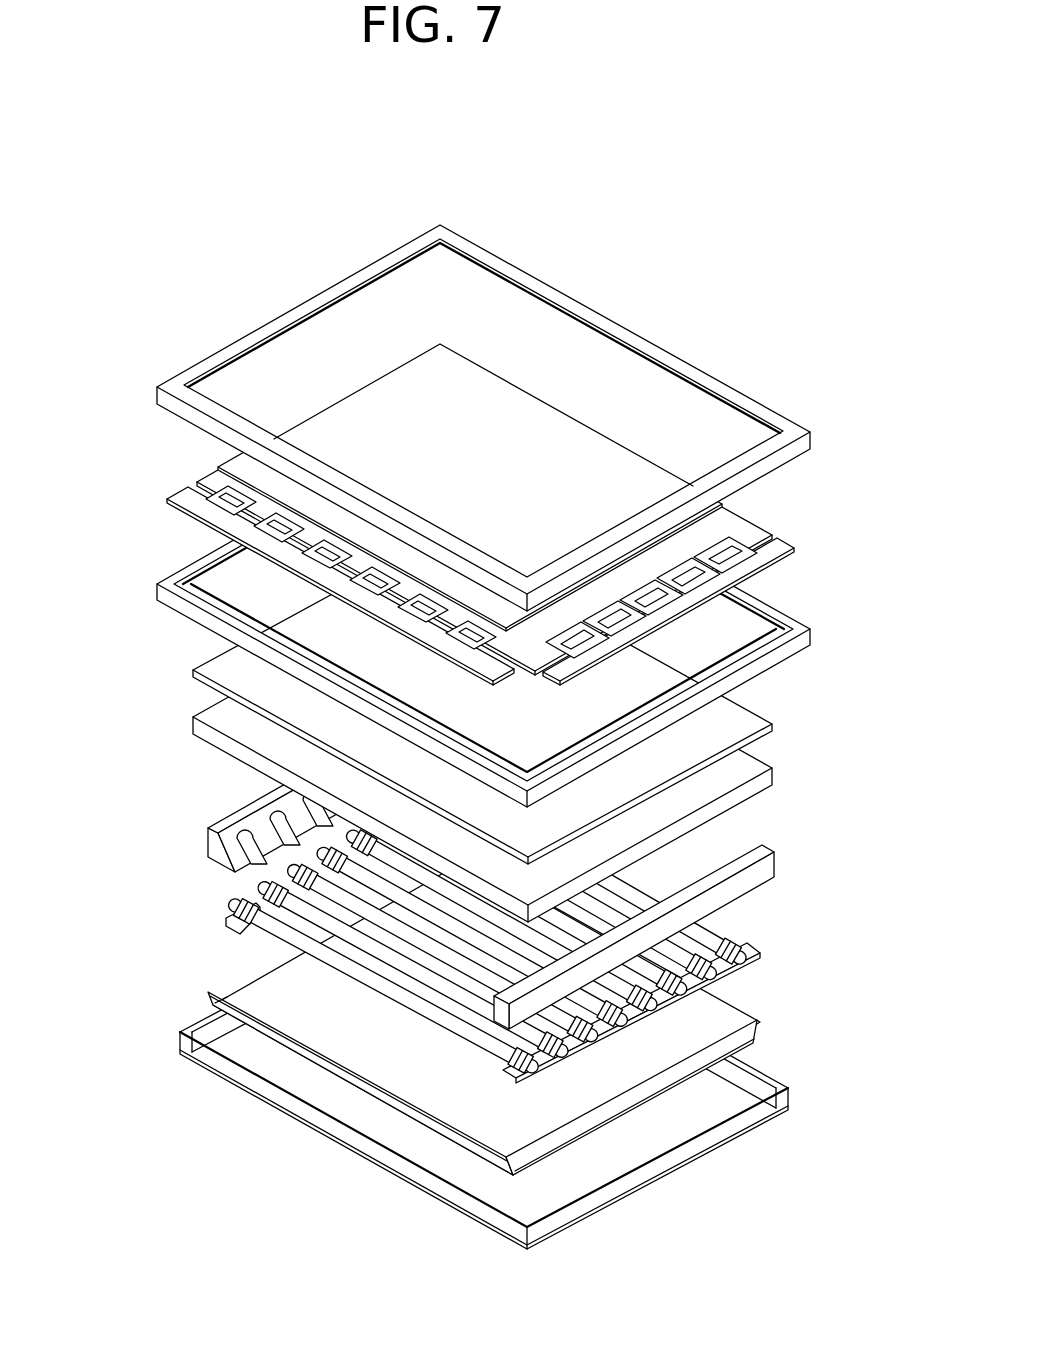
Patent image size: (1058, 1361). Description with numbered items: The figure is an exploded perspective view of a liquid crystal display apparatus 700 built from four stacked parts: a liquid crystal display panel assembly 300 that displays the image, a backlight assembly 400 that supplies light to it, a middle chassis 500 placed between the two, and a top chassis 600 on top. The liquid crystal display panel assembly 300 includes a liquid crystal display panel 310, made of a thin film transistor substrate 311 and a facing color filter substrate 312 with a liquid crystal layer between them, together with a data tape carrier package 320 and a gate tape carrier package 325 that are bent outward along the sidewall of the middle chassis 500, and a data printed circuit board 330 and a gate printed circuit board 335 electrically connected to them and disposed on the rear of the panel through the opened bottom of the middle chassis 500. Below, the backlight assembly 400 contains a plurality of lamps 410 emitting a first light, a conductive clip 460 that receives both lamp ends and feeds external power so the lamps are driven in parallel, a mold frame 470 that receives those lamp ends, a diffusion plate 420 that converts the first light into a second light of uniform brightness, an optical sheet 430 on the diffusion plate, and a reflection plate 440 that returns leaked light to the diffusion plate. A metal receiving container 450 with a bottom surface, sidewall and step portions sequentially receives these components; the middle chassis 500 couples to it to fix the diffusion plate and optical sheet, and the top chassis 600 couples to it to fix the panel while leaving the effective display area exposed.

The liquid crystal display apparatus 700 is at (470, 171).
The top chassis 600 is at (765, 417).
The liquid crystal display panel assembly 300 is at (490, 514).
The liquid crystal display panel 310 is at (505, 514).
The thin film transistor substrate 311 is at (755, 530).
The color filter substrate 312 is at (868, 620).
The data tape carrier package 320 is at (193, 500).
The data printed circuit board 330 is at (213, 520).
The gate tape carrier package 325 is at (752, 568).
The gate printed circuit board 335 is at (772, 560).
The middle chassis 500 is at (787, 650).
The backlight assembly 400 is at (406, 893).
The optical sheet 430 is at (433, 700).
The diffusion plate 420 is at (213, 712).
The lamps 410 is at (434, 918).
The conductive clip 460 is at (245, 916).
The mold frame 470 is at (228, 818).
The reflection plate 440 is at (338, 1065).
The receiving container 450 is at (367, 1150).